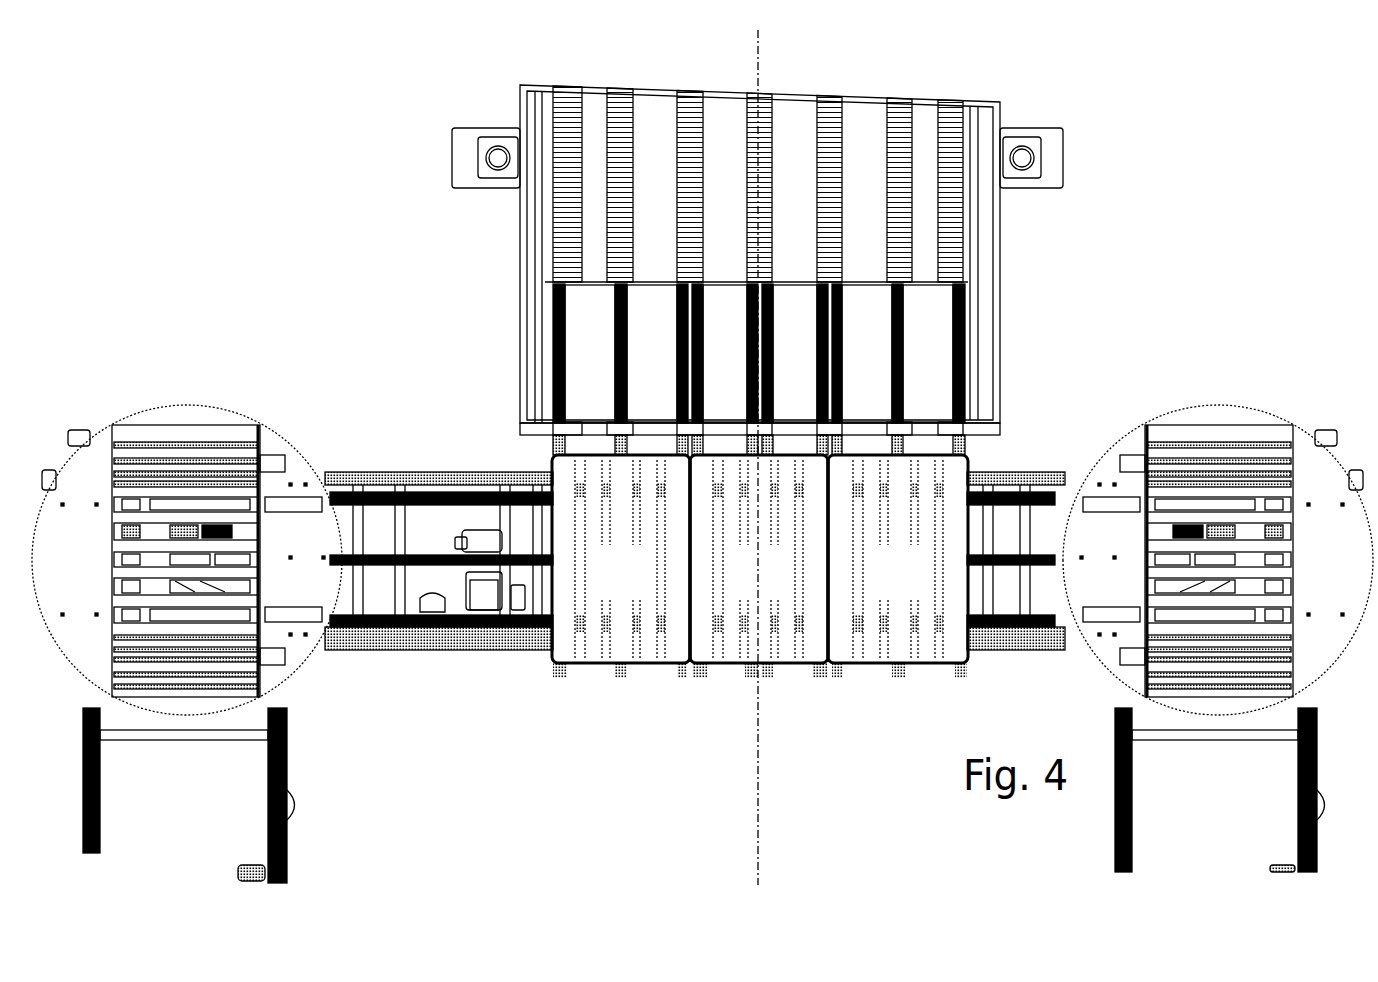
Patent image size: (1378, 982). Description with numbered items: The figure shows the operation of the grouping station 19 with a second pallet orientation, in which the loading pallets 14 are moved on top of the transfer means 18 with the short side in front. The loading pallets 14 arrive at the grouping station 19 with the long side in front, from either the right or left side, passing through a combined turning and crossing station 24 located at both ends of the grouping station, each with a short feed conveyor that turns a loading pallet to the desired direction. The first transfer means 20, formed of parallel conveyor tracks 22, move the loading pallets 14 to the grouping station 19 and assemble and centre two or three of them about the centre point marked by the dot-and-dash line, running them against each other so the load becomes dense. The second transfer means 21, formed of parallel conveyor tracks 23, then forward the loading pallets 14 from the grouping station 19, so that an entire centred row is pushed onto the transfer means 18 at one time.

The loading pallet 14 is at (605, 586).
The transfer means 18 is at (485, 67).
The grouping station 19 is at (744, 805).
The first transfer means 20 is at (420, 440).
The second transfer means 21 is at (880, 818).
The conveyor tracks 22 is at (488, 640).
The conveyor tracks 23 is at (677, 663).
The turning and crossing station 24 is at (115, 363).